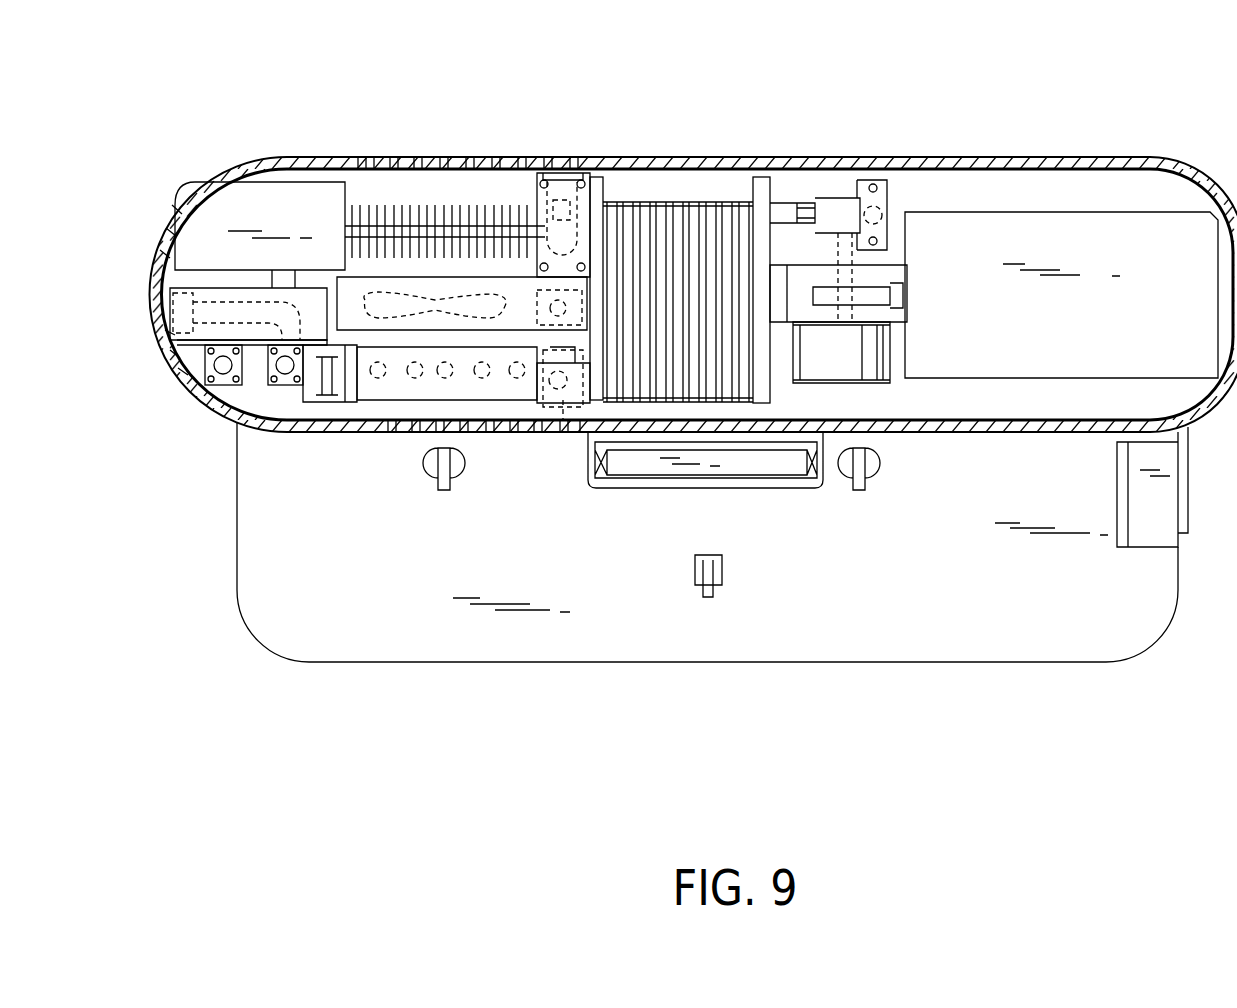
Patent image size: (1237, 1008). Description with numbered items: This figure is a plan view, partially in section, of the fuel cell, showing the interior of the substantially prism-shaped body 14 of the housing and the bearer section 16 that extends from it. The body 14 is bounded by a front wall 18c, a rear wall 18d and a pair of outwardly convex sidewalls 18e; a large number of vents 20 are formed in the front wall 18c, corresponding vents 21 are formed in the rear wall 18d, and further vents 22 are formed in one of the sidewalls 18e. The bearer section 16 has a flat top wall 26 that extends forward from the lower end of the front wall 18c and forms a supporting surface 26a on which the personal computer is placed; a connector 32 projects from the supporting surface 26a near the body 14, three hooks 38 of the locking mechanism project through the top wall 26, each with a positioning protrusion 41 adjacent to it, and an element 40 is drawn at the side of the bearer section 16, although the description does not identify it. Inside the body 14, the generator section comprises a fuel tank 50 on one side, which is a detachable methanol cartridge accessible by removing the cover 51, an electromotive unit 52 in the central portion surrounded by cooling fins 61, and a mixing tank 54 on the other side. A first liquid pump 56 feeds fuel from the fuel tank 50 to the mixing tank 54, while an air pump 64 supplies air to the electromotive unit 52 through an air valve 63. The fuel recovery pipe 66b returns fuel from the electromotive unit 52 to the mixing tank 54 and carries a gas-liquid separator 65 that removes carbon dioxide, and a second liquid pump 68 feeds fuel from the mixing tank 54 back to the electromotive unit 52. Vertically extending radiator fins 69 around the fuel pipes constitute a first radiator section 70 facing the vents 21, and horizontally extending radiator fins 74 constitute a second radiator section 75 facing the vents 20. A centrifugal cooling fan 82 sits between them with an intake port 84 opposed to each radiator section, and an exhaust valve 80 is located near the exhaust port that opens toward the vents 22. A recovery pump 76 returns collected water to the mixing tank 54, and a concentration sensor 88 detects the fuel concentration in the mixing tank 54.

The body 14 is at (918, 152).
The bearer section 16 is at (608, 628).
The front wall 18c is at (983, 434).
The rear wall 18d is at (810, 157).
The sidewalls 18e is at (203, 170).
The vents 20 is at (406, 433).
The vents 21 is at (384, 158).
The vents 22 is at (161, 243).
The top wall 26 is at (427, 645).
The supporting surface 26a is at (936, 645).
The connector 32 is at (770, 468).
The hooks 38 is at (445, 492).
The connector 40 is at (1147, 540).
The positioning protrusions 41 is at (458, 467).
The fuel tank 50 is at (1065, 230).
The cover 51 is at (1224, 178).
The electromotive unit 52 is at (655, 204).
The mixing tank 54 is at (285, 184).
The first liquid pump 56 is at (893, 276).
The cooling fins 61 is at (713, 204).
The air valve 63 is at (858, 203).
The air pump 64 is at (878, 350).
The gas-liquid separator 65 is at (568, 174).
The fuel recovery pipe 66b is at (430, 235).
The second liquid pump 68 is at (220, 378).
The radiator fins 69 is at (408, 205).
The first radiator section 70 is at (358, 188).
The radiator fins 74 is at (498, 433).
The second radiator section 75 is at (377, 401).
The recovery pump 76 is at (563, 420).
The exhaust valve 80 is at (173, 307).
The cooling fan 82 is at (478, 290).
The intake port 84 is at (327, 403).
The concentration sensor 88 is at (290, 388).